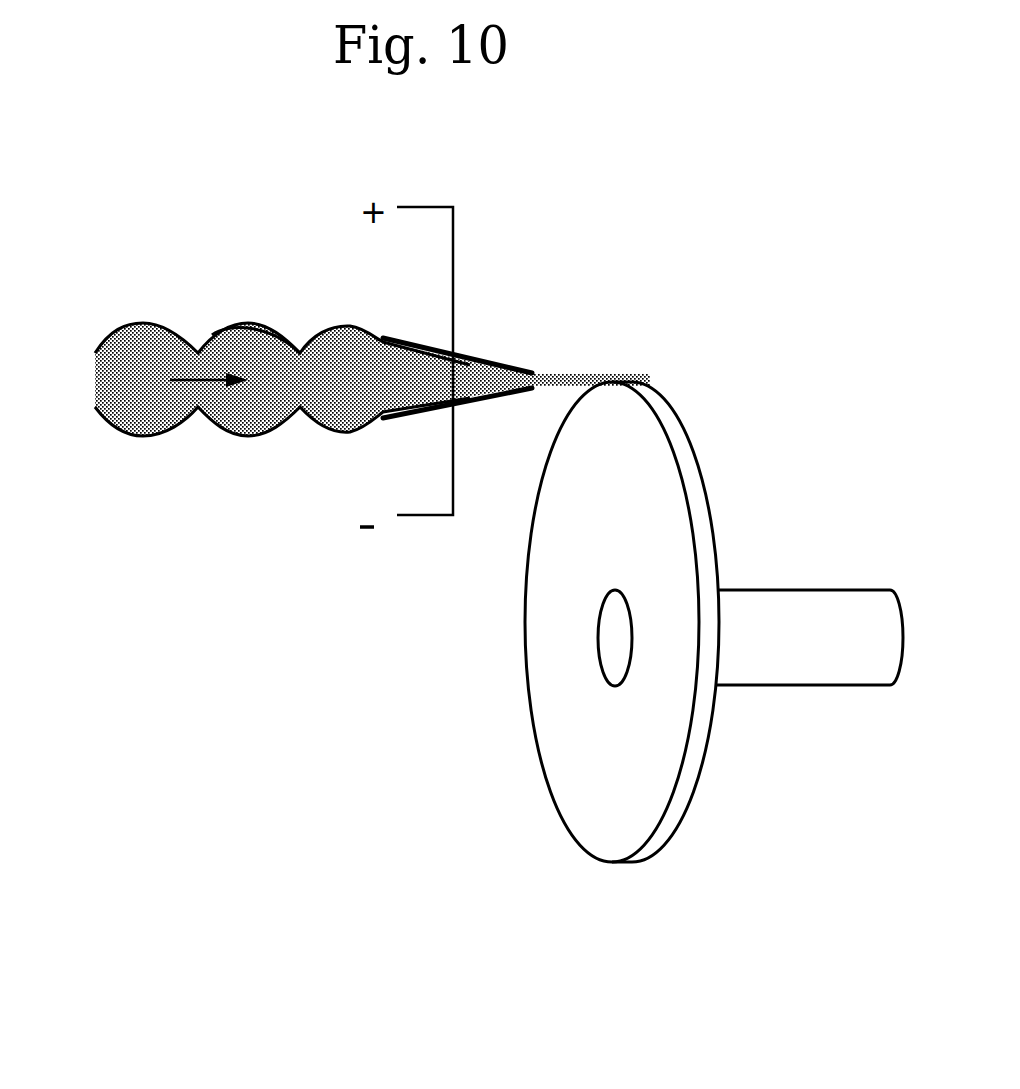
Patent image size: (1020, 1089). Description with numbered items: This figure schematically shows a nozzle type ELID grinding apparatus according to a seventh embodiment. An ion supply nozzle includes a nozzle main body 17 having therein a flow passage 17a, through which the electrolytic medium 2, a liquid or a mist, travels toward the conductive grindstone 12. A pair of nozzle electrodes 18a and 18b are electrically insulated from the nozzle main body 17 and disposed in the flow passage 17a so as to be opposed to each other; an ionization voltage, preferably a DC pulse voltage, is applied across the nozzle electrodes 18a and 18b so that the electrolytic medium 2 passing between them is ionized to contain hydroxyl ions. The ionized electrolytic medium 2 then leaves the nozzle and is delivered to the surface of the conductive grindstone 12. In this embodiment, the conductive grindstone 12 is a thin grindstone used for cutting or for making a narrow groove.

The nozzle main body 17 is at (103, 413).
The flow passage 17a is at (245, 407).
The nozzle electrode 18a is at (412, 340).
The nozzle electrode 18b is at (415, 413).
The electrolytic medium 2 is at (549, 384).
The conductive grindstone 12 is at (685, 458).